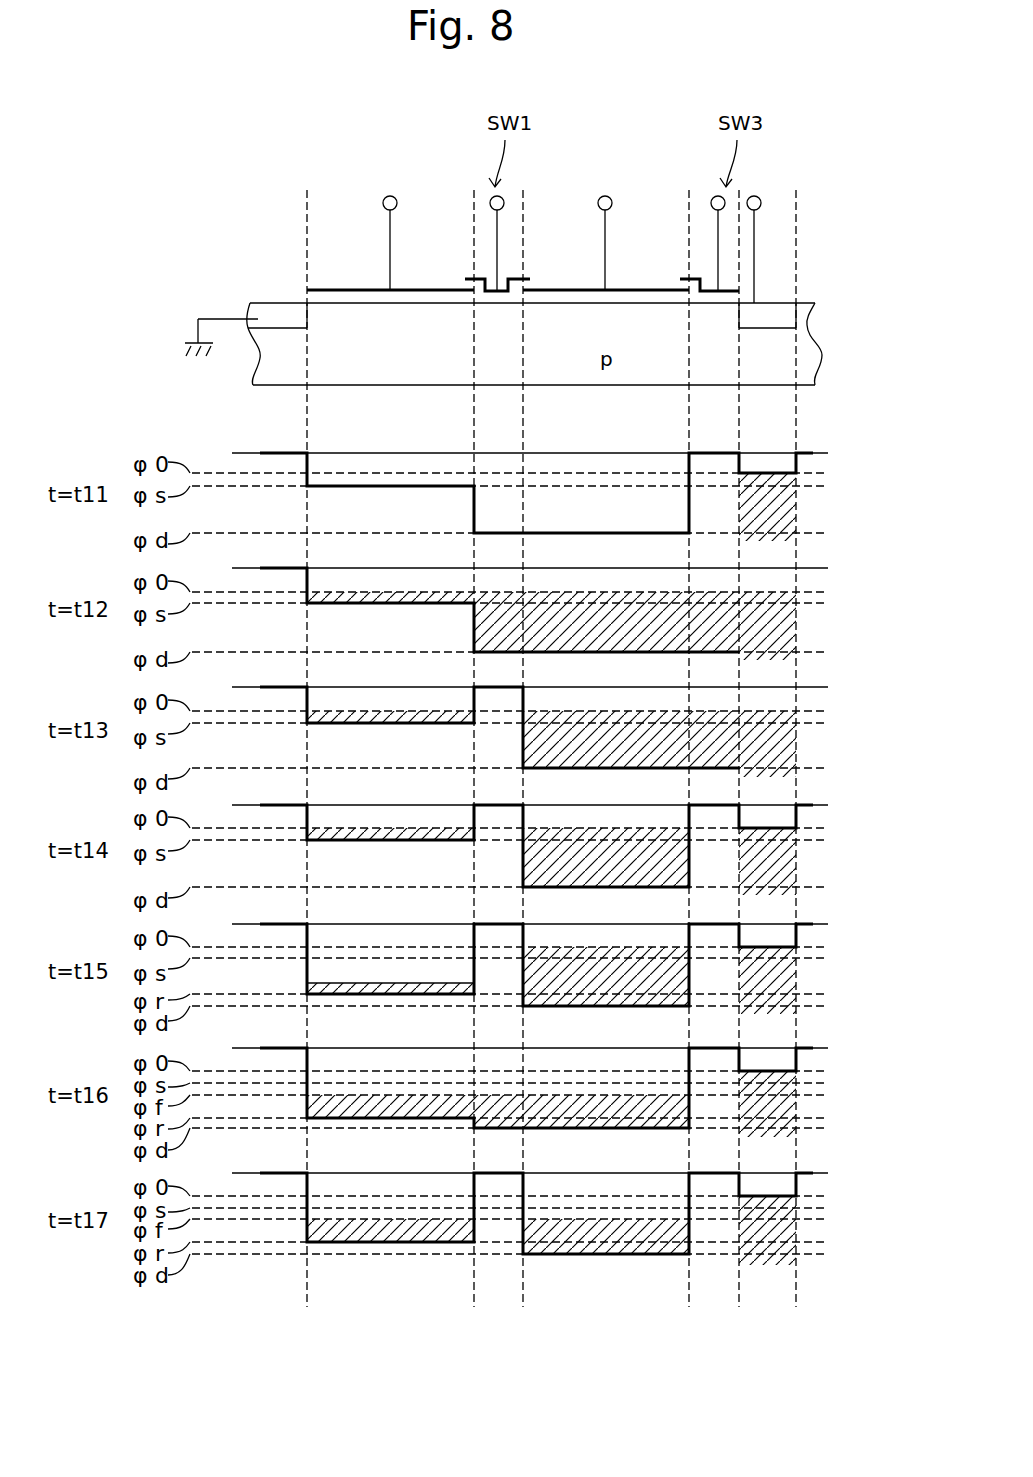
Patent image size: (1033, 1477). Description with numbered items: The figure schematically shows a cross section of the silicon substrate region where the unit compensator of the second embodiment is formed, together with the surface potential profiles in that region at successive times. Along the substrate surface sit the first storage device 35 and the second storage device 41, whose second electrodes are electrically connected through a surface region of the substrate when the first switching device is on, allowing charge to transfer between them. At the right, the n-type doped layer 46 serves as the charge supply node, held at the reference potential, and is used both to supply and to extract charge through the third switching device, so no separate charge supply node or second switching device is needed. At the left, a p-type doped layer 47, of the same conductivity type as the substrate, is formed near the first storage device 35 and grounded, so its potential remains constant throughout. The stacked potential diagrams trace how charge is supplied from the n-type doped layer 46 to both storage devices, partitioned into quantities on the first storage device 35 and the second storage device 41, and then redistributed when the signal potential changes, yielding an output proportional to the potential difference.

The first storage device 35 is at (396, 179).
The second storage device 41 is at (610, 179).
The n-type doped layer 46 is at (783, 310).
The p-type doped layer 47 is at (268, 316).